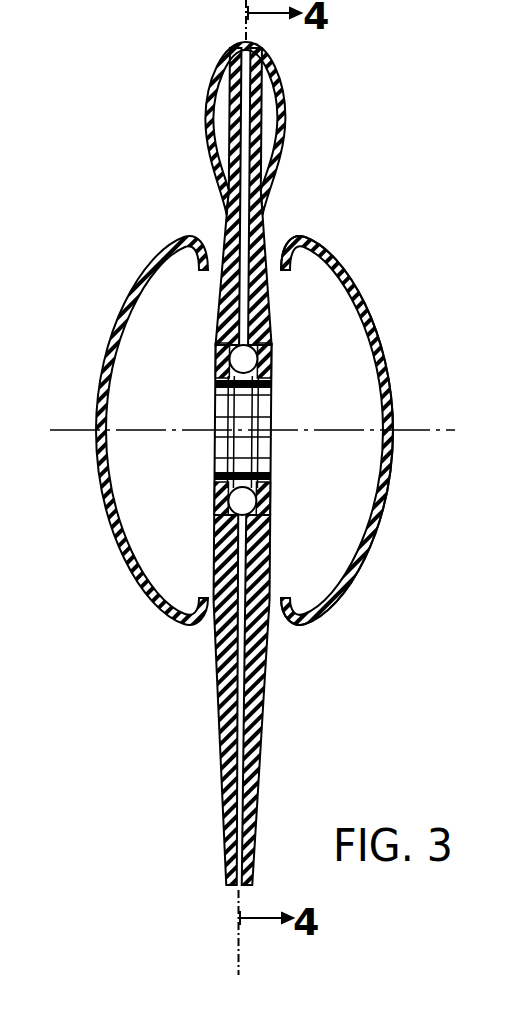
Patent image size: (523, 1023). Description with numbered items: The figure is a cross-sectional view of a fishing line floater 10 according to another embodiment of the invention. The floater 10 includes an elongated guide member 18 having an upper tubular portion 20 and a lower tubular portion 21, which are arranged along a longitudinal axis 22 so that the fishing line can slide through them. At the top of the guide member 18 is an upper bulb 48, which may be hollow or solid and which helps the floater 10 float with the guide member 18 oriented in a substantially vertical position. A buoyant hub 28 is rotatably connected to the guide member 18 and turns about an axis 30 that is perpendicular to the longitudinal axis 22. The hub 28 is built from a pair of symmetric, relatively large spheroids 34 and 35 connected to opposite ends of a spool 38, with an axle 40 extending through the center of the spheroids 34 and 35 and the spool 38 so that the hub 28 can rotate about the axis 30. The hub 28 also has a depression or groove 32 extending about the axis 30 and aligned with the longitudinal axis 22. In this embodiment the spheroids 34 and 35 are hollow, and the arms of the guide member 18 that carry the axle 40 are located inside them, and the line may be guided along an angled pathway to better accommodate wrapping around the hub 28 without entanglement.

The floater 10 is at (400, 124).
The upper bulb 48 is at (281, 77).
The upper tubular portion 20 is at (230, 209).
The guide member 18 is at (265, 208).
The spheroid 34 is at (121, 309).
The buoyant hub 28 is at (360, 274).
The spheroid 35 is at (379, 327).
The depression or groove 32 is at (270, 353).
The spool 38 is at (246, 413).
The axle 40 is at (270, 463).
The axis 30 is at (454, 431).
The lower tubular portion 21 is at (222, 784).
The longitudinal axis 22 is at (237, 950).